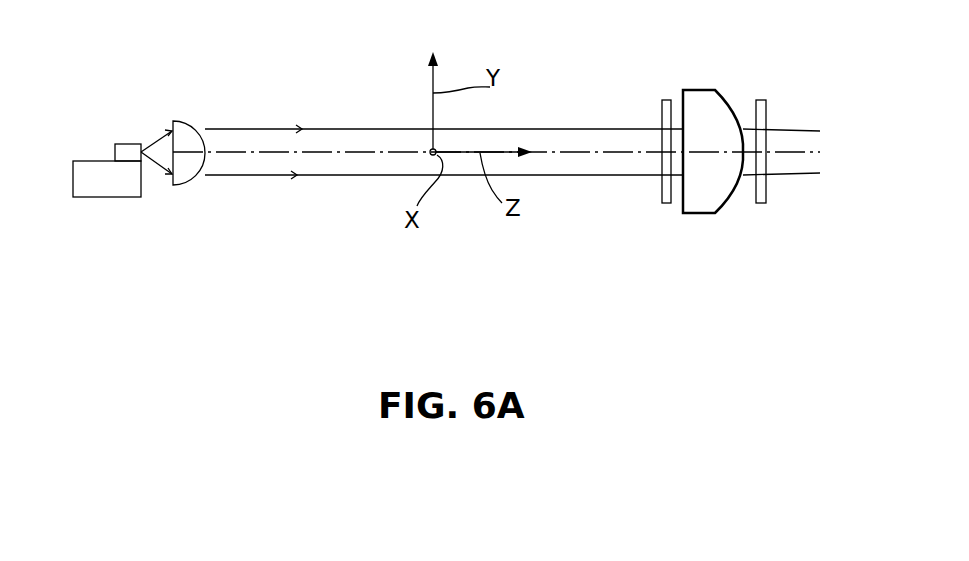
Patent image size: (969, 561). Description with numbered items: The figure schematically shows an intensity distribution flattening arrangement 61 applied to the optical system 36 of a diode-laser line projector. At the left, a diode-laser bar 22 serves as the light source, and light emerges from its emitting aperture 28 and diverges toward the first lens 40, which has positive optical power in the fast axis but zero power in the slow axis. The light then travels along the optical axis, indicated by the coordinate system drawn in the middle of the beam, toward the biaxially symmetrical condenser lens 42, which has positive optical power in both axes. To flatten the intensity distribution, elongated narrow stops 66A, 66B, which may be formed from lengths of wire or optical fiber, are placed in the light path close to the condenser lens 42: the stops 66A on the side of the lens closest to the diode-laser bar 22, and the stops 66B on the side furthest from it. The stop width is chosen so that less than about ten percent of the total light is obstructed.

The diode-laser bar 22 is at (130, 144).
The emitting aperture 28 is at (143, 150).
The lens 40 is at (185, 122).
The optical system 36 is at (533, 268).
The arrangement 61 is at (724, 145).
The stops 66A is at (668, 203).
The lens 42 is at (727, 205).
The stops 66B is at (766, 190).